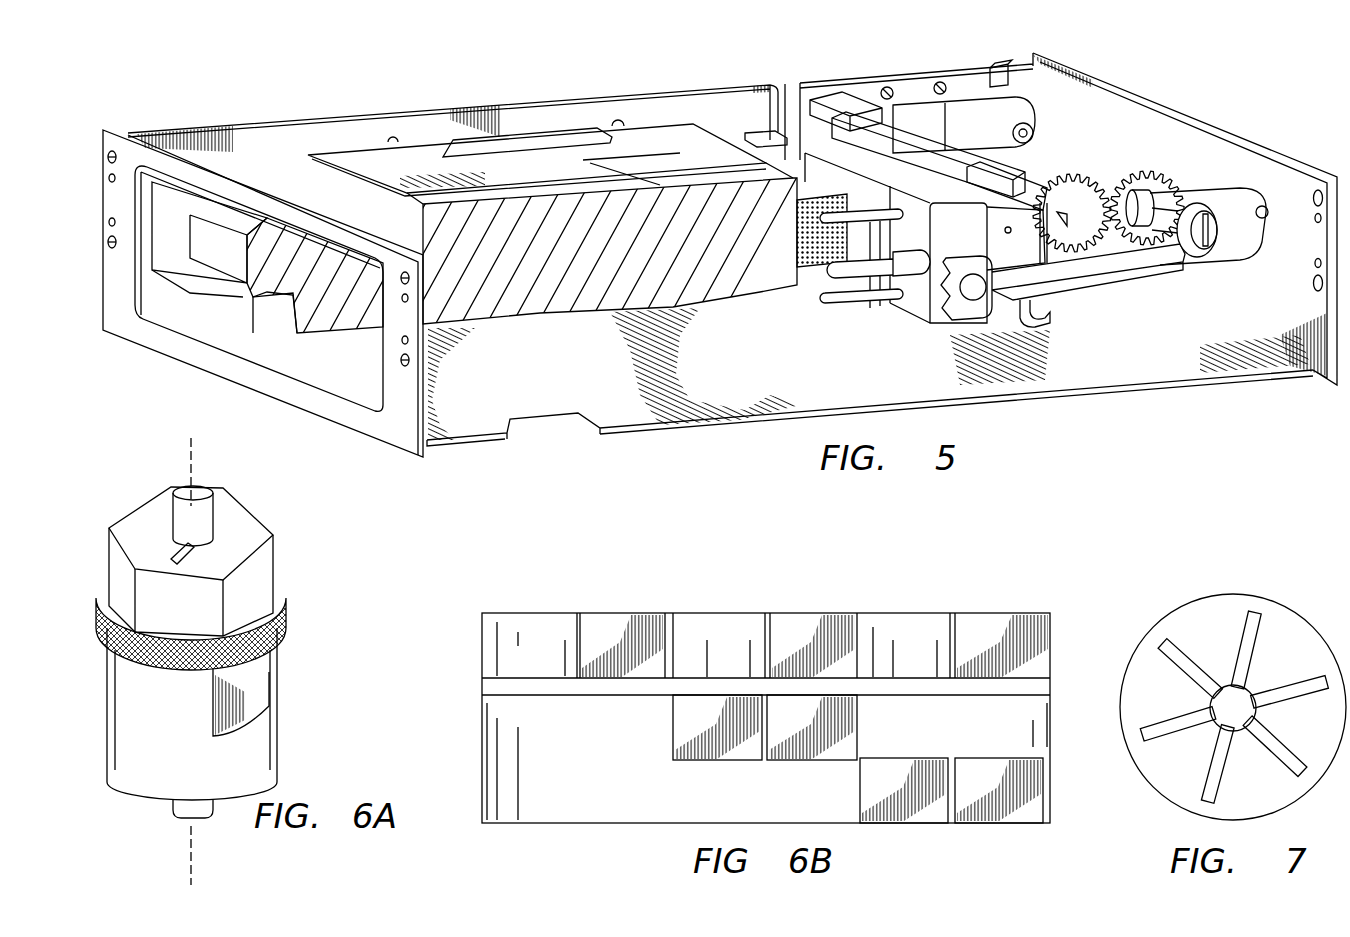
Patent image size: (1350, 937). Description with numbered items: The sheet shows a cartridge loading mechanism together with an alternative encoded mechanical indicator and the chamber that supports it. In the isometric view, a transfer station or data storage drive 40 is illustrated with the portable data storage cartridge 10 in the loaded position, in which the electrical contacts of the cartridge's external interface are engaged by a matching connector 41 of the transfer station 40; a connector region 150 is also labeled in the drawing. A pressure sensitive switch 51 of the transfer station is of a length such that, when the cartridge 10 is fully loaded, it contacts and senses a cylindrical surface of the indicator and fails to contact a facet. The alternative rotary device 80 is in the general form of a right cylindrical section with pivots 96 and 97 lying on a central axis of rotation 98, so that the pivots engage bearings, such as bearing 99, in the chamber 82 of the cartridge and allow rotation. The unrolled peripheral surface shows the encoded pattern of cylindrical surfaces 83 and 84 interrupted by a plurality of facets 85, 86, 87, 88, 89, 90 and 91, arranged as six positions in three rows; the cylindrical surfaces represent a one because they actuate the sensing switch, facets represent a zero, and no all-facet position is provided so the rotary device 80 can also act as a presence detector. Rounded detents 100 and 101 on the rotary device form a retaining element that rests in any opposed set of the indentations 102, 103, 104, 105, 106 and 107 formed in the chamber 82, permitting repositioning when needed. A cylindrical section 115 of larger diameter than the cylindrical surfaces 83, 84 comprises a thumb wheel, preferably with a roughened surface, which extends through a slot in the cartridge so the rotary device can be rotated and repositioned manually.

In FIG. 5, the transfer station 40 is at (350, 104).
In FIG. 5, the portable data storage cartridge 10 is at (533, 307).
In FIG. 5, the connector 41 is at (793, 305).
In FIG. 5, the connector pin field 150 is at (797, 180).
In FIG. 5, the switch 51 is at (843, 307).
In FIG. 6A, the rotary device 80 is at (88, 655).
In FIG. 6A, the facet 90 is at (146, 504).
In FIG. 6B, the facet 90 is at (997, 618).
In FIG. 6A, the pivot 96 is at (199, 528).
In FIG. 6A, the facet 87 is at (273, 535).
In FIG. 6B, the facet 87 is at (807, 618).
In FIG. 6A, the facet 85 is at (161, 584).
In FIG. 6B, the facet 85 is at (620, 618).
In FIG. 6A, the cylindrical surface 83 is at (258, 588).
In FIG. 6B, the cylindrical surface 83 is at (524, 618).
In FIG. 6A, the detent 100 is at (215, 494).
In FIG. 6A, the detent 101 is at (199, 543).
In FIG. 6A, the cylindrical section 115 is at (286, 627).
In FIG. 6A, the cylindrical surface 84 is at (143, 785).
In FIG. 6B, the cylindrical surface 84 is at (570, 824).
In FIG. 6A, the facet 86 is at (262, 677).
In FIG. 6B, the facet 86 is at (722, 762).
In FIG. 6B, the facet 88 is at (815, 762).
In FIG. 6B, the facet 89 is at (898, 757).
In FIG. 6B, the facet 91 is at (993, 757).
In FIG. 6A, the pivot 97 is at (180, 814).
In FIG. 6A, the central axis of rotation 98 is at (189, 449).
In FIG. 7, the chamber 82 is at (1143, 652).
In FIG. 7, the bearing 99 is at (1242, 692).
In FIG. 7, the indentation 102 is at (1255, 622).
In FIG. 7, the indentation 103 is at (1287, 703).
In FIG. 7, the indentation 104 is at (1270, 747).
In FIG. 7, the indentation 105 is at (1213, 763).
In FIG. 7, the indentation 106 is at (1187, 717).
In FIG. 7, the indentation 107 is at (1197, 668).